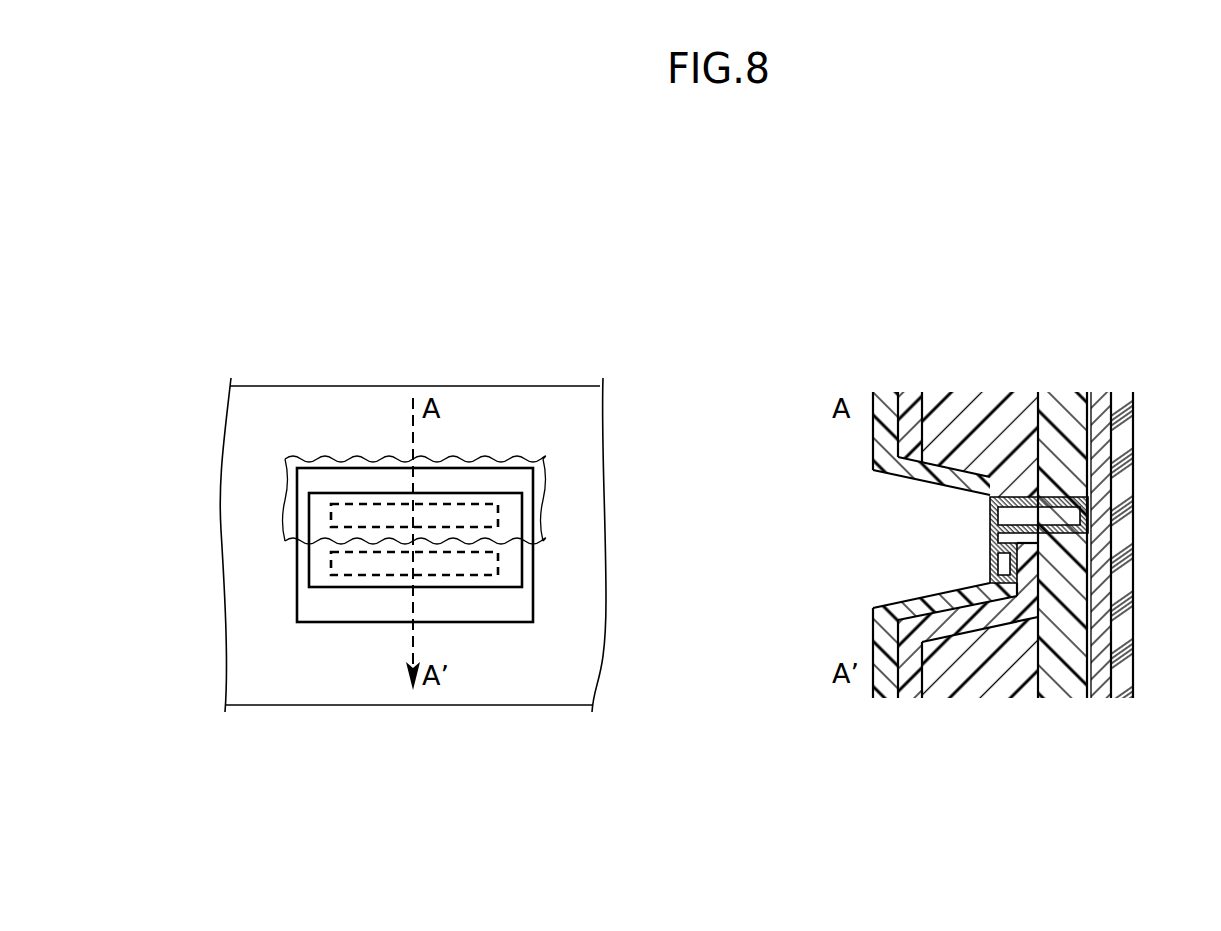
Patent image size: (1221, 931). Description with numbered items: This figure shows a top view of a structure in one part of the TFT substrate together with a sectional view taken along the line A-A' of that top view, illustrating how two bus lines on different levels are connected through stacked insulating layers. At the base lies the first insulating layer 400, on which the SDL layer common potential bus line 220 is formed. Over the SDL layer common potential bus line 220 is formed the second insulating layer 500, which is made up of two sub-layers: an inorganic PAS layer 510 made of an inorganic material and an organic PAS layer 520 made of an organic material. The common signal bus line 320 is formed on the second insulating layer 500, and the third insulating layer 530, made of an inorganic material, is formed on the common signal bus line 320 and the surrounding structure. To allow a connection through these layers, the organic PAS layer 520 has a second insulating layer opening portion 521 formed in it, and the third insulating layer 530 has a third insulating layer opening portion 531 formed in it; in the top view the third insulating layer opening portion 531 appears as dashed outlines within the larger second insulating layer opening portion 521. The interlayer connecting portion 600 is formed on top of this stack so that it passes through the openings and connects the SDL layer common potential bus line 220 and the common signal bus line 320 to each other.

The SDL layer common potential bus line 220 is at (543, 496).
The common signal bus line 320 is at (915, 700).
The first insulating layer 400 is at (1122, 700).
The second insulating layer 500 is at (1004, 622).
The inorganic PAS layer 510 is at (1068, 700).
The organic PAS layer 520 is at (988, 700).
The third insulating layer 530 is at (888, 700).
The second insulating layer opening portion 521 is at (534, 608).
The third insulating layer opening portion 531 is at (331, 514).
The interlayer connecting portion 600 is at (522, 561).